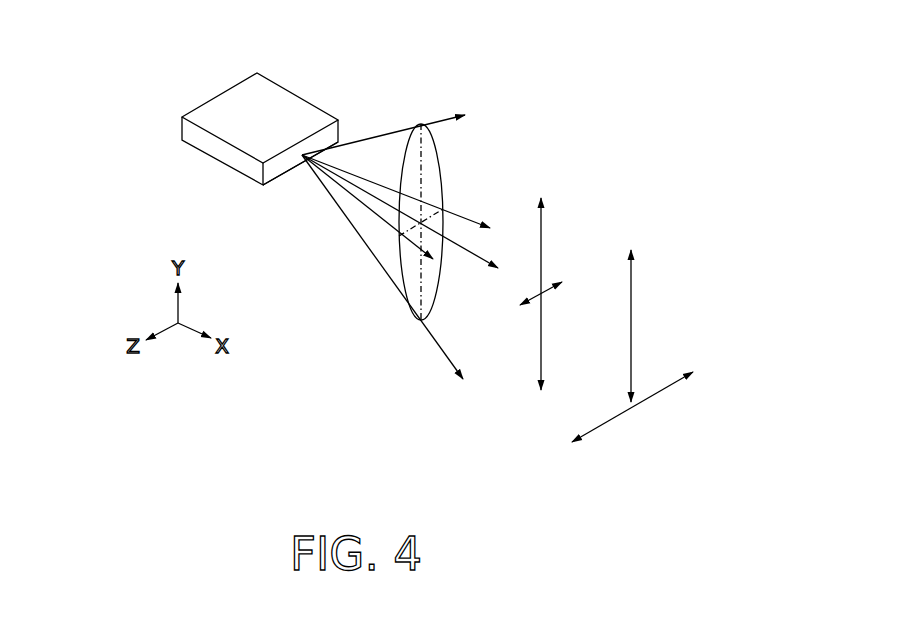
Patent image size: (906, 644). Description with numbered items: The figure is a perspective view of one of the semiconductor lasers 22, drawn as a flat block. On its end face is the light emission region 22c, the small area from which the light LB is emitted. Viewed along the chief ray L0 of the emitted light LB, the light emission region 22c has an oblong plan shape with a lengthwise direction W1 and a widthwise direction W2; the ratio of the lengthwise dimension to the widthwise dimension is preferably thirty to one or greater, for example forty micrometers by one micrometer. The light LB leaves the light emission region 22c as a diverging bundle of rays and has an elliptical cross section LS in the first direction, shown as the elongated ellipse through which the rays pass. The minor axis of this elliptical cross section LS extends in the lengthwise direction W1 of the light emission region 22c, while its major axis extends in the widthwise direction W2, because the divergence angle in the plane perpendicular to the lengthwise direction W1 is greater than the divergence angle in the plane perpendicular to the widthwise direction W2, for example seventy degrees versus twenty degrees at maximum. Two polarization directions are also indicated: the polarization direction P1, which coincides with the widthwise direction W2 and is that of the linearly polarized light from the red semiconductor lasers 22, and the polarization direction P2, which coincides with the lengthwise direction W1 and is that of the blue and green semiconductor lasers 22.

The semiconductor laser 22 is at (277, 104).
The light emission region 22c is at (272, 168).
The emitted light LB is at (420, 125).
The elliptical cross section LS is at (442, 150).
The chief ray L0 is at (473, 258).
The lengthwise direction W1 is at (557, 286).
The widthwise direction W2 is at (541, 281).
The polarization direction P1 is at (631, 312).
The polarization direction P2 is at (651, 399).